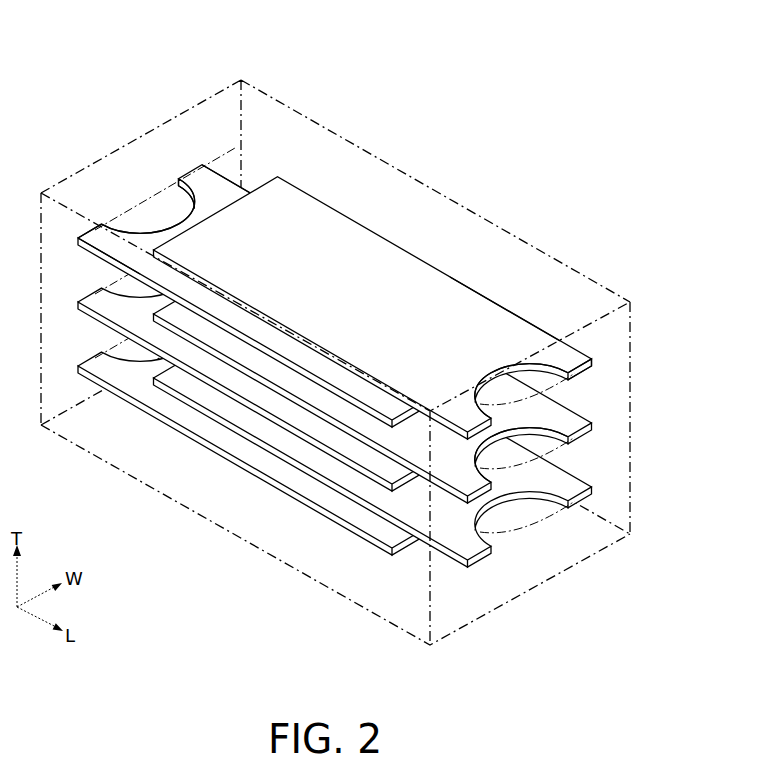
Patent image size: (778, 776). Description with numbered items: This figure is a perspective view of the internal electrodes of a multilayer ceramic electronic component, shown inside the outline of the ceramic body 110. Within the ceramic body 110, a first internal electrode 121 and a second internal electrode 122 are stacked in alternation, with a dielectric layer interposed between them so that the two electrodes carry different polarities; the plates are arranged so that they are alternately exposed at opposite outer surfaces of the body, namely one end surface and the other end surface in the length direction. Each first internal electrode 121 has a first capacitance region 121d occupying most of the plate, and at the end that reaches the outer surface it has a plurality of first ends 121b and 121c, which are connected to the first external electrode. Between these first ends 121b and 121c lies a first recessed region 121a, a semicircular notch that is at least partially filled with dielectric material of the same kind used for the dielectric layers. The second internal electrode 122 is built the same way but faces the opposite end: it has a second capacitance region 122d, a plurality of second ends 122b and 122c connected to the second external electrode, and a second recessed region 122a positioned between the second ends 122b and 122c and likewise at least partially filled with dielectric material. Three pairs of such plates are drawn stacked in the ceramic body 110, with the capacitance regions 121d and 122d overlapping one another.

The ceramic body 110 is at (335, 345).
The first internal electrode 121 is at (338, 384).
The first recessed region 121a is at (562, 380).
The first end 121b is at (570, 428).
The first end 121c is at (573, 345).
The first capacitance region 121d is at (500, 315).
The second internal electrode 122 is at (335, 341).
The second recessed region 122a is at (147, 206).
The second end 122b is at (98, 229).
The second end 122c is at (183, 189).
The second capacitance region 122d is at (222, 202).